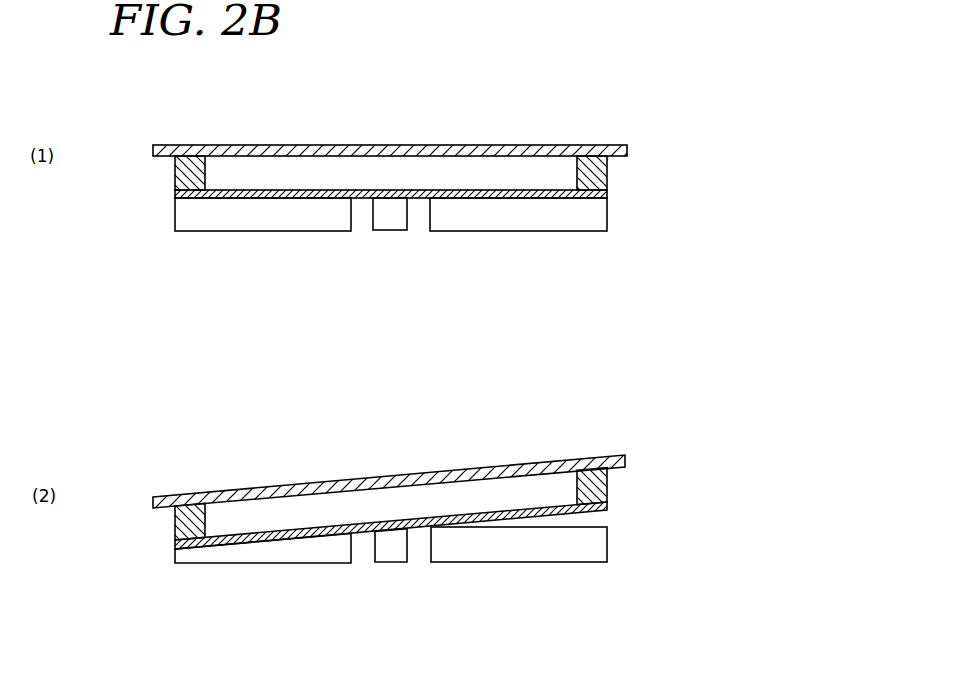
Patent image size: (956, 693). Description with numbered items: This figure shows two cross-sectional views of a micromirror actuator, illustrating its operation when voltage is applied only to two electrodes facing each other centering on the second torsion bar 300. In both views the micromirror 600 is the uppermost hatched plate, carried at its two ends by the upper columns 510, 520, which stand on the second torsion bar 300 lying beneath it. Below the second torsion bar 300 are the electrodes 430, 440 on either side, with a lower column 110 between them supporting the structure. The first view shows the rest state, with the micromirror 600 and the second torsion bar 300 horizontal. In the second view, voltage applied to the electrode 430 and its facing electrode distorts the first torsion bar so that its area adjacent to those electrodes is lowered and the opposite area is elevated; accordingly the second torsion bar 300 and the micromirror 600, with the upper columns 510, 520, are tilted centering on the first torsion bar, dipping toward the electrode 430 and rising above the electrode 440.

The lower column 110 is at (390, 223).
The second torsion bar 300 is at (310, 190).
The electrode 430 is at (218, 222).
The electrode 440 is at (542, 222).
The upper column 510 is at (175, 178).
The upper column 520 is at (607, 177).
The micromirror 600 is at (525, 145).